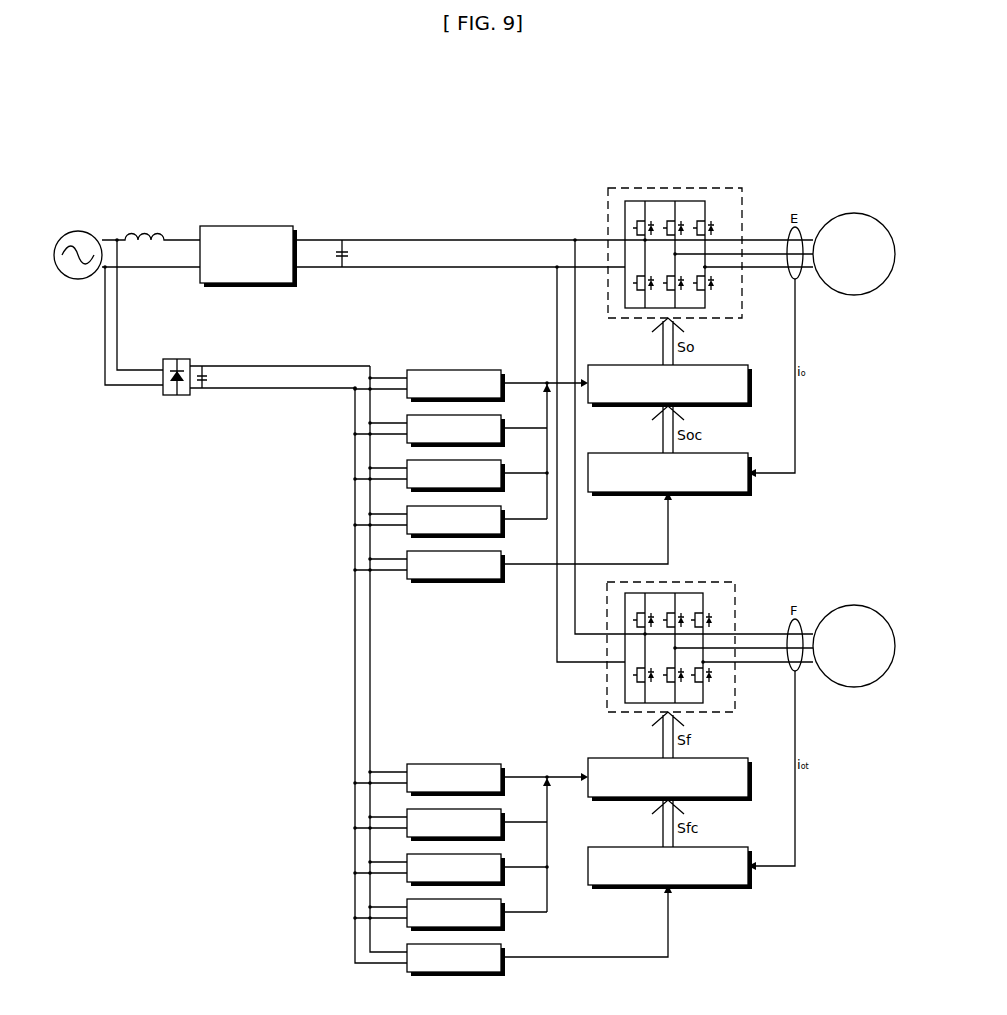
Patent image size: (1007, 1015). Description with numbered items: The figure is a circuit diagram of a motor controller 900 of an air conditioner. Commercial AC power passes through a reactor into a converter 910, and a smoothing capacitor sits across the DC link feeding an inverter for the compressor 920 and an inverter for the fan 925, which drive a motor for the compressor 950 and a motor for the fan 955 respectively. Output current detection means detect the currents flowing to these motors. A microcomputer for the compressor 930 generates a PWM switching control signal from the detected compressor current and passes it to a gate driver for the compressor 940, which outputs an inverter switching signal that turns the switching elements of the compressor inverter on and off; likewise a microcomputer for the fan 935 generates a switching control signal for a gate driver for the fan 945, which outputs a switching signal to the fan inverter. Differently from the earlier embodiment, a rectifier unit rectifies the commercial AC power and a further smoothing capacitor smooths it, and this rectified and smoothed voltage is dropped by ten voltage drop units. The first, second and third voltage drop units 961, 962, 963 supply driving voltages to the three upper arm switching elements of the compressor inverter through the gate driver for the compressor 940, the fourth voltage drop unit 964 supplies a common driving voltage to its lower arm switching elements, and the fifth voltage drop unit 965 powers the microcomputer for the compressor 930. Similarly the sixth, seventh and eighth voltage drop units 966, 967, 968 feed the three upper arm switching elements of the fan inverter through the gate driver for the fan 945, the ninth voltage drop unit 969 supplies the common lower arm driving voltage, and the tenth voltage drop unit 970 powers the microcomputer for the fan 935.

The motor controller 900 is at (264, 181).
The converter 910 is at (273, 225).
The inverter for the compressor 920 is at (697, 187).
The inverter for the fan 925 is at (697, 581).
The microcomputer for the compressor 930 is at (730, 453).
The microcomputer for the fan 935 is at (730, 847).
The gate driver for the compressor 940 is at (730, 365).
The gate driver for the fan 945 is at (730, 758).
The motor for the compressor 950 is at (866, 213).
The motor for the fan 955 is at (866, 605).
The first voltage drop unit 961 is at (408, 397).
The second voltage drop unit 962 is at (408, 442).
The third voltage drop unit 963 is at (408, 487).
The fourth voltage drop unit 964 is at (408, 533).
The fifth voltage drop unit 965 is at (408, 578).
The sixth voltage drop unit 966 is at (408, 791).
The seventh voltage drop unit 967 is at (408, 836).
The eighth voltage drop unit 968 is at (408, 881).
The ninth voltage drop unit 969 is at (408, 926).
The tenth voltage drop unit 970 is at (408, 971).